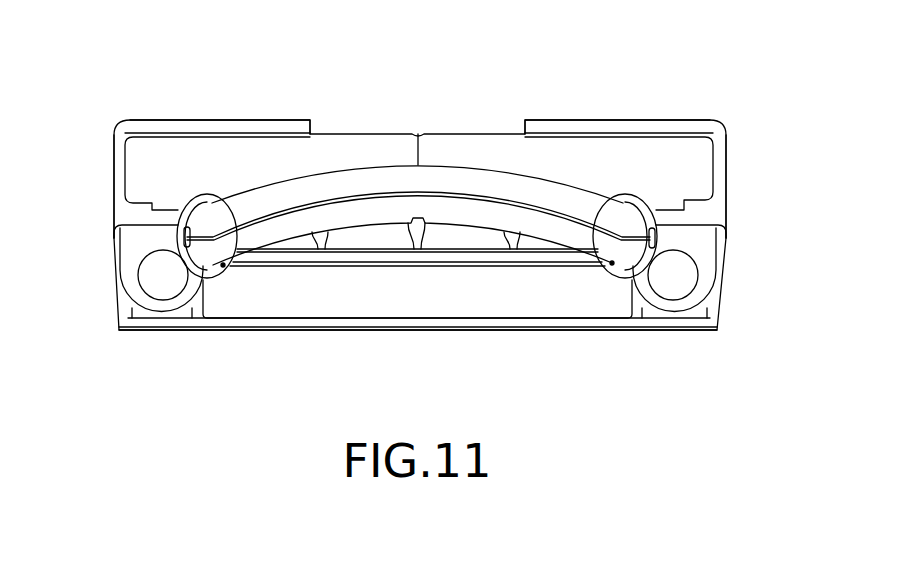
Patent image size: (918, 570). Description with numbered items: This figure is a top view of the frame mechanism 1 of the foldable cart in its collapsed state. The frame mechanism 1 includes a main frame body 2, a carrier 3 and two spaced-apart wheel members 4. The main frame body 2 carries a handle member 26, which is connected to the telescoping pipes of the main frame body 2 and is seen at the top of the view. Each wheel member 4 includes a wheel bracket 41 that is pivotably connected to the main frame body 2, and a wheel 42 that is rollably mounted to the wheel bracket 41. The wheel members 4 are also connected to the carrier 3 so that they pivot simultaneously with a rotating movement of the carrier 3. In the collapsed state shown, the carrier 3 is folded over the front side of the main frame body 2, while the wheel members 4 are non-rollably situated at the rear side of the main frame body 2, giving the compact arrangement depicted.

The frame mechanism 1 is at (707, 88).
The main frame body 2 is at (517, 200).
The handle member 26 is at (457, 187).
The carrier 3 is at (585, 333).
The wheel members 4 is at (115, 107).
The wheel bracket 41 is at (113, 182).
The wheel 42 is at (260, 175).